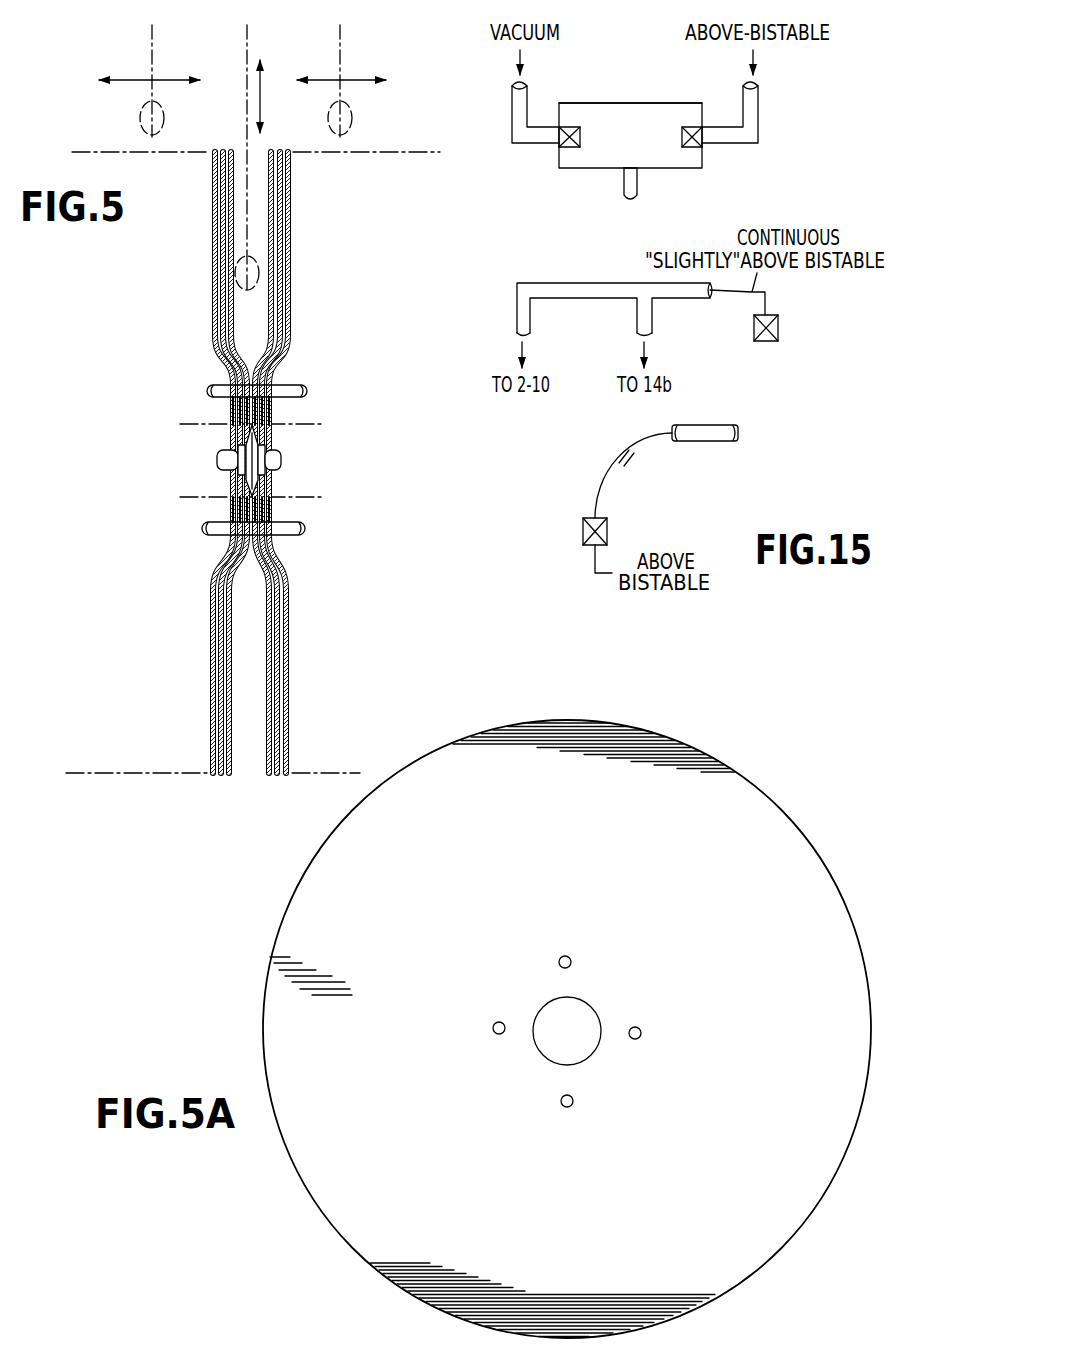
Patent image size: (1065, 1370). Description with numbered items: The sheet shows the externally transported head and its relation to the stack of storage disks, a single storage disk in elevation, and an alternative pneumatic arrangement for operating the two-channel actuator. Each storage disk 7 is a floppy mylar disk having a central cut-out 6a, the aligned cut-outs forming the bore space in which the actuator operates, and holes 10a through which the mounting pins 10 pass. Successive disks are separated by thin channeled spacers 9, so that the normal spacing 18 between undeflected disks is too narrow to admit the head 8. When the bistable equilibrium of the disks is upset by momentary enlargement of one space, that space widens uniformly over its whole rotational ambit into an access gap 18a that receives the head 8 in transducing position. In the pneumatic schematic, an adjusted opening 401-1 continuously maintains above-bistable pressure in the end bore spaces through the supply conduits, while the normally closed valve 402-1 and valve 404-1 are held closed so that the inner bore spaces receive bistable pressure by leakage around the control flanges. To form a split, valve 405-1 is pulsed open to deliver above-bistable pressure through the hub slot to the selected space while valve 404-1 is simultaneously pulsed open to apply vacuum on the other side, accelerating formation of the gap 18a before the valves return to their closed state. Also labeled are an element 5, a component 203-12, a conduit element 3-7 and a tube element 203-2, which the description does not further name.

In FIG. 5, the needle / central actuating element 5 is at (256, 437).
In FIG. 5, the storage disks 7 is at (292, 211).
In FIG. 5A, the storage disks 7 is at (264, 1030).
In FIG. 5, the head 8 is at (140, 118).
In FIG. 5, the channeled spacers 9 is at (268, 403).
In FIG. 5, the pins 10 is at (305, 386).
In FIG. 5, the normal spacing 18 is at (223, 780).
In FIG. 5, the access gap 18a is at (250, 752).
In FIG. 5A, the central cut-outs 6a is at (598, 1002).
In FIG. 5A, the holes 10a is at (499, 1021).
In FIG. 15, the valve 404-1 is at (570, 147).
In FIG. 15, the valve 402-1 is at (700, 140).
In FIG. 15, the chamber 203-12 is at (640, 183).
In FIG. 15, the adjusted opening 401-1 is at (780, 330).
In FIG. 15, the conduit 3-7 is at (609, 470).
In FIG. 15, the valve 405-1 is at (583, 533).
In FIG. 15, the tube 203-2 is at (725, 441).